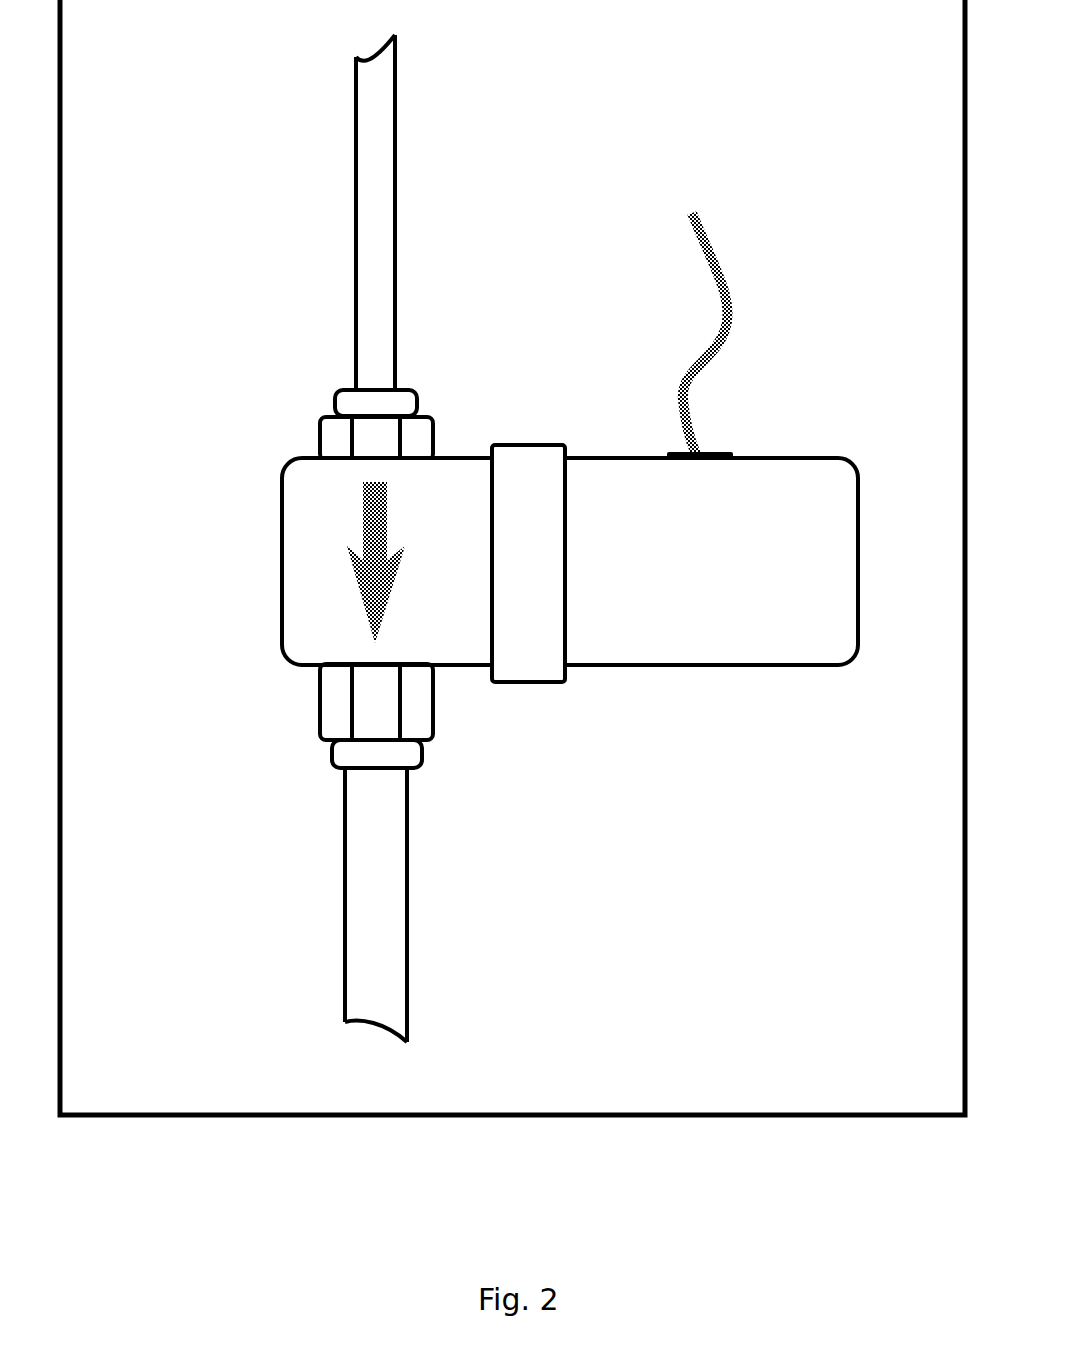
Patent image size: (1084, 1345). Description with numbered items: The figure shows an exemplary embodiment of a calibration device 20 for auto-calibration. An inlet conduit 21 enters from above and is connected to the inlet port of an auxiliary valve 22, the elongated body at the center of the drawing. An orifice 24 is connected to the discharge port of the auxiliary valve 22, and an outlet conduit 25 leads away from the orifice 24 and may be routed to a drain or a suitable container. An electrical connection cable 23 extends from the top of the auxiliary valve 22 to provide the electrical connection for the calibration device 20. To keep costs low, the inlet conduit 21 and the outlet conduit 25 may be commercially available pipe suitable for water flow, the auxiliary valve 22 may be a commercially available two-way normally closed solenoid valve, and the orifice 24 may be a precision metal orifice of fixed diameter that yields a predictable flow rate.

The calibration device 20 is at (480, 1118).
The inlet conduit 21 is at (402, 152).
The auxiliary valve 22 is at (268, 515).
The electrical connection cable 23 is at (678, 197).
The orifice 24 is at (450, 710).
The outlet conduit 25 is at (327, 883).